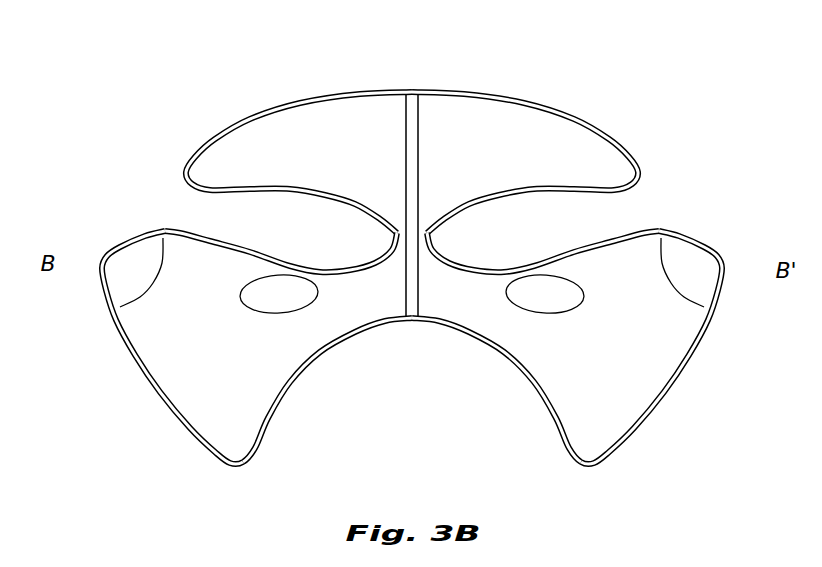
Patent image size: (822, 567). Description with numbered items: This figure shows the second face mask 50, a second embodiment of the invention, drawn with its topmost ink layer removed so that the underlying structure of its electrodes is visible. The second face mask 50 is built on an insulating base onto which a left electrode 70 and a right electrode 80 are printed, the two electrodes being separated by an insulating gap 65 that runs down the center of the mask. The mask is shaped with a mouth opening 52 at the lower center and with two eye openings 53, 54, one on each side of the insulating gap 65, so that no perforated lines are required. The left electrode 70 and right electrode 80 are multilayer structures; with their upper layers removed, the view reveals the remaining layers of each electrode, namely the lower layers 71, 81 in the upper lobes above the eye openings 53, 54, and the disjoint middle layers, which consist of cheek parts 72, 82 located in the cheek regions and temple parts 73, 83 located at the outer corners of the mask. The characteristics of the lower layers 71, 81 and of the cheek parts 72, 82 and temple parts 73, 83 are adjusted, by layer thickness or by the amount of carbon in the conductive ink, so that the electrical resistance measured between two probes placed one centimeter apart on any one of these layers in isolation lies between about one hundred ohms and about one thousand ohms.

The second face mask 50 is at (434, 242).
The mouth opening 52 is at (397, 370).
The eye opening 53 is at (334, 242).
The eye opening 54 is at (467, 242).
The insulating gap 65 is at (411, 102).
The left electrode 70 is at (205, 400).
The lower layer 71 is at (300, 120).
The cheek part 72 is at (264, 288).
The temple part 73 is at (125, 267).
The right electrode 80 is at (594, 396).
The lower layer 81 is at (512, 113).
The cheek part 82 is at (549, 287).
The temple part 83 is at (707, 268).